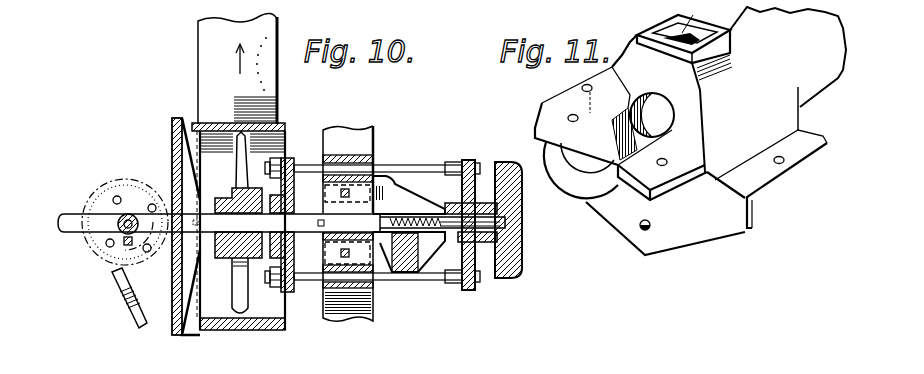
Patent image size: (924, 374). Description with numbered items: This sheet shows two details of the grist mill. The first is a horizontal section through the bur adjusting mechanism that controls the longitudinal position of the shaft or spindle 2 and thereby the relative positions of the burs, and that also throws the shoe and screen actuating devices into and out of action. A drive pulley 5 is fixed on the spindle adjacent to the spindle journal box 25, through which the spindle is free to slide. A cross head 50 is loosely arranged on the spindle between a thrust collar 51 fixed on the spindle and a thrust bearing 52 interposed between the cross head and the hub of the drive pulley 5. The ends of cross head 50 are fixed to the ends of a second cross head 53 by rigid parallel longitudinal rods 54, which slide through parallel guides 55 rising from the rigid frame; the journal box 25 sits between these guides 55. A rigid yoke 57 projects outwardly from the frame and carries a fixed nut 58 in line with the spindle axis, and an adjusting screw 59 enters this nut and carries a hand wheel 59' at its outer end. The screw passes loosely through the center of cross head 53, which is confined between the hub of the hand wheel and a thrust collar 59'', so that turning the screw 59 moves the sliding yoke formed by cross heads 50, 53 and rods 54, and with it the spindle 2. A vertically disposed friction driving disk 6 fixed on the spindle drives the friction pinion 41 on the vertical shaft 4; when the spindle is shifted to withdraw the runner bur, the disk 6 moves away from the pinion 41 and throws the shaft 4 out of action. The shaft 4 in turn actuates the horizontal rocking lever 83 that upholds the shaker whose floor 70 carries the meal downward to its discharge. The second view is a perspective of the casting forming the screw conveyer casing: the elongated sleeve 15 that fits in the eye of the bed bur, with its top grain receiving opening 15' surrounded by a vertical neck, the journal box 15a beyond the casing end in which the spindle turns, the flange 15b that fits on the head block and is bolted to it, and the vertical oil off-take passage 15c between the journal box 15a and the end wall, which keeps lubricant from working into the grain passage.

In FIG. 10, the shaft or spindle 2 is at (80, 232).
In FIG. 10, the vertical shaft 4 is at (125, 217).
In FIG. 10, the friction pinion 41 is at (140, 190).
In FIG. 10, the drive pulley 5 is at (212, 124).
In FIG. 10, the friction driving disk 6 is at (180, 118).
In FIG. 10, the floor 70 is at (373, 126).
In FIG. 10, the cross head 50 is at (294, 168).
In FIG. 10, the thrust collar 51 is at (296, 240).
In FIG. 10, the thrust bearing 52 is at (256, 262).
In FIG. 10, the cross head 53 is at (474, 170).
In FIG. 10, the longitudinal rods 54 is at (428, 165).
In FIG. 10, the parallel guides 55 is at (355, 160).
In FIG. 10, the rigid yoke 57 is at (398, 203).
In FIG. 10, the fixed nut 58 is at (396, 252).
In FIG. 10, the adjusting screw 59 is at (476, 235).
In FIG. 10, the hand wheel 59' is at (537, 201).
In FIG. 10, the thrust collar 59'' is at (476, 166).
In FIG. 10, the spindle journal box 25 is at (349, 193).
In FIG. 10, the horizontal rocking lever 83 is at (118, 297).
In FIG. 11, the sleeve or casing 15 is at (729, 89).
In FIG. 11, the grain receiving opening 15' is at (675, 42).
In FIG. 11, the journal box 15a is at (582, 186).
In FIG. 11, the flange 15b is at (790, 170).
In FIG. 11, the oil off-take passage 15c is at (617, 150).